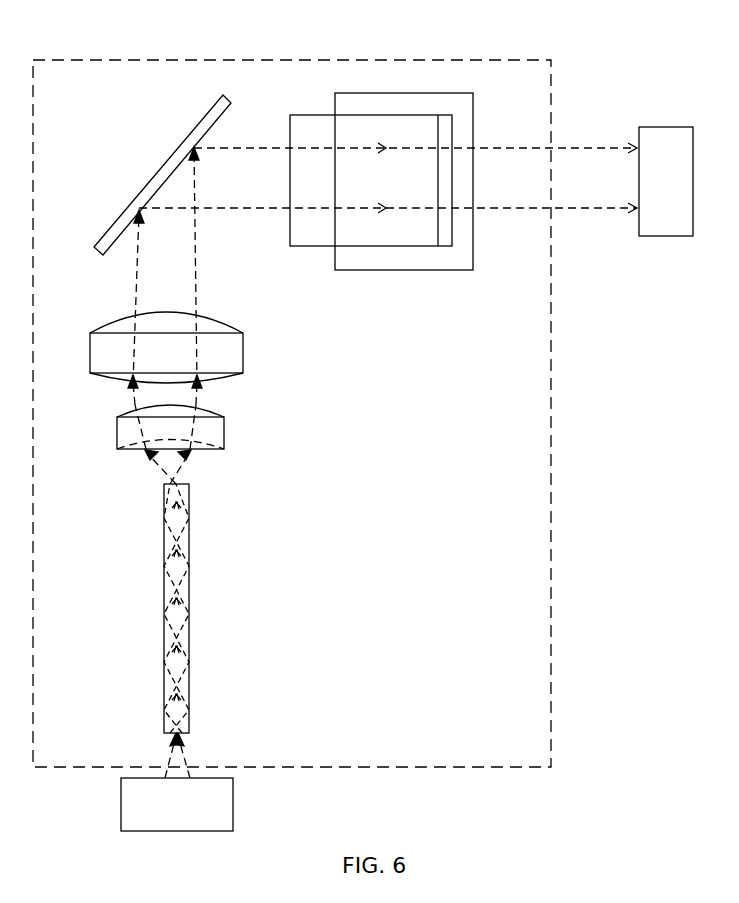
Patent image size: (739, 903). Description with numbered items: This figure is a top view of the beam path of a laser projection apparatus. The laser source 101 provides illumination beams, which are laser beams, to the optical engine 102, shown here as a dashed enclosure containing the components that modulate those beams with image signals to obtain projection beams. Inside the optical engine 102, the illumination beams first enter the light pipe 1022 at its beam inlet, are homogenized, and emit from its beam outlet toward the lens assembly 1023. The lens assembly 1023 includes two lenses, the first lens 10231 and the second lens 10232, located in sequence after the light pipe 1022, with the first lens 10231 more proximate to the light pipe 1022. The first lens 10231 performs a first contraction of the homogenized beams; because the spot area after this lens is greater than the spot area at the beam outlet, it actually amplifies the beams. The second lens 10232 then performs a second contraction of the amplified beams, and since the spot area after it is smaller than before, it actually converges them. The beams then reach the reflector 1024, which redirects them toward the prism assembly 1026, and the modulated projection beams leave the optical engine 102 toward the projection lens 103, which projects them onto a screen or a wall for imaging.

The laser source 101 is at (238, 803).
The optical engine 102 is at (556, 649).
The light pipe 1022 is at (194, 538).
The lens assembly 1023 is at (254, 299).
The first lens 10231 is at (231, 430).
The second lens 10232 is at (250, 355).
The reflector 1024 is at (131, 200).
The prism assembly 1026 is at (398, 276).
The projection lens 103 is at (661, 242).